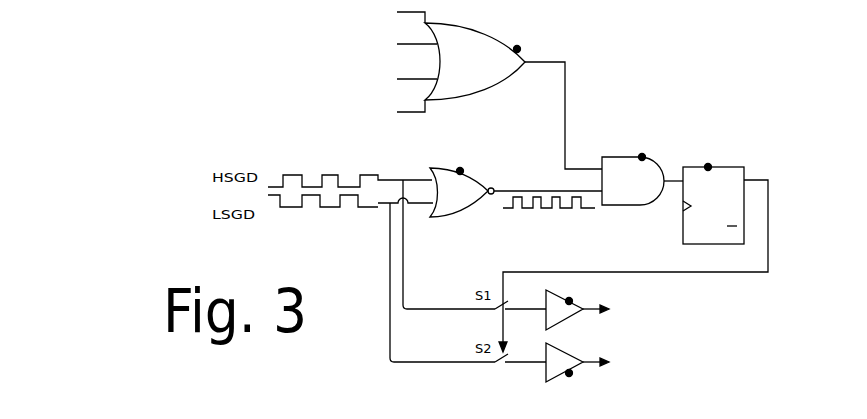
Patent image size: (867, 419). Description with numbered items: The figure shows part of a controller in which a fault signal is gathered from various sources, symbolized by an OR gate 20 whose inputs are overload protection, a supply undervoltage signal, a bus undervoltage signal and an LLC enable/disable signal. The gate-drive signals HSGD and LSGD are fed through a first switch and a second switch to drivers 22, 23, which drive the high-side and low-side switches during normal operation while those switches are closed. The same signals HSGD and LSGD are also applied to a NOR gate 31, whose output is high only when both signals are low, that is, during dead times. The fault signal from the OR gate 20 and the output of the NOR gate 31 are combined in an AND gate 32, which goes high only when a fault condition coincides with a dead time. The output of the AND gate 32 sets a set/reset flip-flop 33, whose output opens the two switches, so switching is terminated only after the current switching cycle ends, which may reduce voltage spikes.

The OR gate 20 is at (517, 49).
The NOR gate 31 is at (460, 171).
The AND gate 32 is at (642, 157).
The set/reset flip-flop 33 is at (708, 167).
The driver 22 is at (569, 301).
The driver 23 is at (569, 373).